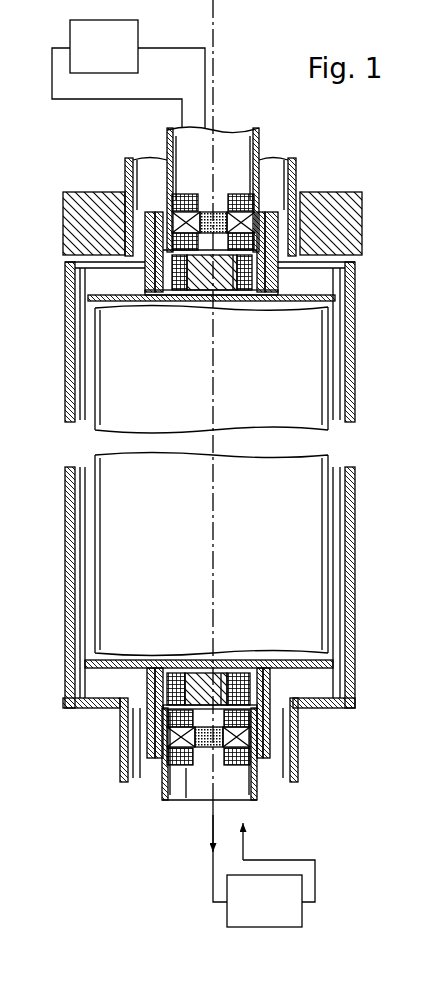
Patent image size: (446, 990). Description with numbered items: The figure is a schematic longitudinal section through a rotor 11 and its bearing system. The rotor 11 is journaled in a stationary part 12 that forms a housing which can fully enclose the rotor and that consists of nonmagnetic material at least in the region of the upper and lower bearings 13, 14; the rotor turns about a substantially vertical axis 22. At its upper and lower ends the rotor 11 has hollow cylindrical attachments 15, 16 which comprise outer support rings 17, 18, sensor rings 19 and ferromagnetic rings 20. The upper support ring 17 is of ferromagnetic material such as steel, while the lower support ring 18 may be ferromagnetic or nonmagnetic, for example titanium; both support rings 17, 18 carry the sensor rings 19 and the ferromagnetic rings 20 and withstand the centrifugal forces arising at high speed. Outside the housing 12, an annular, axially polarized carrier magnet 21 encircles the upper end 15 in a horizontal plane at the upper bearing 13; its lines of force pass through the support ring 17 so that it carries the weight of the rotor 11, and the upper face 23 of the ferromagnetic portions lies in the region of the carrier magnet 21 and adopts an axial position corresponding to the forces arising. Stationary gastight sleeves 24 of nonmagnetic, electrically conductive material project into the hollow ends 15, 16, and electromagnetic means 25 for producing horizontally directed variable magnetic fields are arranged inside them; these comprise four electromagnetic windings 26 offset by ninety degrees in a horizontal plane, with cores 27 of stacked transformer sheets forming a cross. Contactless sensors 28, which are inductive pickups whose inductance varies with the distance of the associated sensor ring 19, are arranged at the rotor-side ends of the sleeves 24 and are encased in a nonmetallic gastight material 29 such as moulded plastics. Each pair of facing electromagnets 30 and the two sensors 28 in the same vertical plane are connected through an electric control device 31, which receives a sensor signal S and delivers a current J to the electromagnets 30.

The rotor 11 is at (120, 530).
The stationary part 12 is at (72, 590).
The upper bearing 13 is at (99, 183).
The lower bearing 14 is at (288, 812).
The upper hollow cylindrical attachment 15 is at (142, 270).
The lower hollow cylindrical attachment 16 is at (138, 714).
The upper support ring 17 is at (134, 232).
The lower support ring 18 is at (128, 783).
The sensor ring 19 is at (164, 291).
The ferromagnetic ring 20 is at (160, 207).
The carrier magnet 21 is at (75, 220).
The axis of rotation 22 is at (215, 493).
The upper face of the ferromagnetic portions 23 is at (281, 213).
The stationary gastight sleeve 24 is at (172, 136).
The electromagnetic means 25 is at (221, 190).
The electromagnetic winding 26 is at (182, 768).
The core 27 is at (268, 742).
The contactless sensor 28 is at (183, 292).
The nonmetallic gastight material 29 is at (204, 291).
The electromagnet 30 is at (188, 777).
The electric control device 31 is at (90, 40).
The current signal J is at (245, 848).
The sensor signal S is at (224, 851).